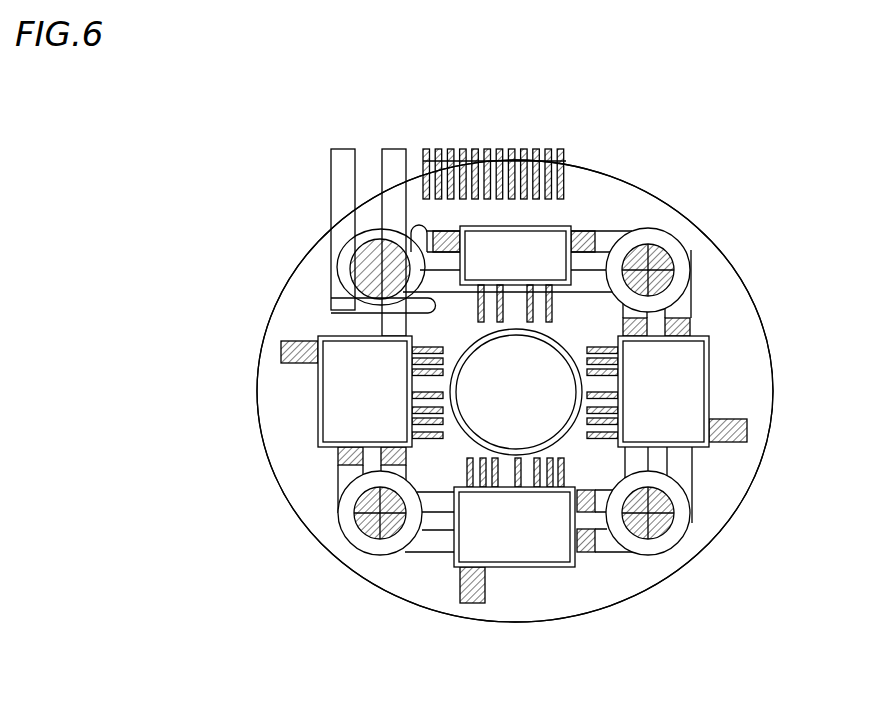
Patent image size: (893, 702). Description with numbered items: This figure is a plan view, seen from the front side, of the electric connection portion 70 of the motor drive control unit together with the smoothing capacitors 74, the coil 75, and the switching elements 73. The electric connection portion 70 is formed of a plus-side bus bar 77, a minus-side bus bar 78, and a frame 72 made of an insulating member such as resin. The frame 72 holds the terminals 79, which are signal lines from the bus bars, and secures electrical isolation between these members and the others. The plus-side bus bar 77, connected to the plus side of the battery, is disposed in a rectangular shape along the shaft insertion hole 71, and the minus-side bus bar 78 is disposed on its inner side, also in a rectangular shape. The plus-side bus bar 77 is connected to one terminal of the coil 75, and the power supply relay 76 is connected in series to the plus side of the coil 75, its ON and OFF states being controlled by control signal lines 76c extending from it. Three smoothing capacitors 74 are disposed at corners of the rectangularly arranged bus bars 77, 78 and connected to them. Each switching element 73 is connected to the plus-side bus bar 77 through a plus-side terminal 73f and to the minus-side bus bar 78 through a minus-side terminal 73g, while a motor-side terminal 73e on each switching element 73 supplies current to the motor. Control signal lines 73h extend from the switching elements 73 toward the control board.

The electric connection portion 70 is at (553, 613).
The shaft insertion hole 71 is at (492, 345).
The frame 72 is at (667, 205).
The switching element 73 is at (693, 377).
The motor-side terminal 73e is at (300, 365).
The plus-side terminal 73f is at (690, 330).
The minus-side terminal 73g is at (713, 330).
The control signal line 73h is at (597, 440).
The smoothing capacitor 74 is at (675, 252).
The coil 75 is at (355, 250).
The power supply relay 76 is at (553, 233).
The control signal line 76c is at (697, 318).
The plus-side bus bar 77 is at (338, 173).
The minus-side bus bar 78 is at (393, 152).
The terminal 79 is at (565, 152).